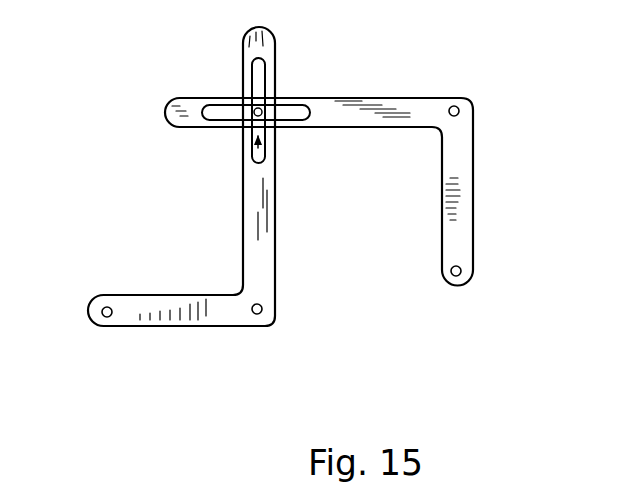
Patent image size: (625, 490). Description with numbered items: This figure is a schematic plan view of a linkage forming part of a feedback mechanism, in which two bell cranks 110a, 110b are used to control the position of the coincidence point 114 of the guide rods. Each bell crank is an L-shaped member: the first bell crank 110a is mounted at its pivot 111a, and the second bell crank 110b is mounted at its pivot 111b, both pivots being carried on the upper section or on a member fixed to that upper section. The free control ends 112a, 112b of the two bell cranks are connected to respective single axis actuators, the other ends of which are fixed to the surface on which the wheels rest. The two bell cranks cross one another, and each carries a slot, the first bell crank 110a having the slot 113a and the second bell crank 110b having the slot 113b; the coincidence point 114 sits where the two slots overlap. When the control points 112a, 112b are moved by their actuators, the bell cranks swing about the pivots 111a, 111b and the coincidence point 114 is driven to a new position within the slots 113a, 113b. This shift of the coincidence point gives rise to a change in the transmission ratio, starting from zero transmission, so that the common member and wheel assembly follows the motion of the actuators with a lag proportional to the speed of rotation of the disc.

The bell crank 110a is at (137, 294).
The bell crank 110b is at (476, 159).
The pivot 111a is at (276, 320).
The pivot 111b is at (456, 99).
The control end 112a is at (99, 329).
The control end 112b is at (477, 275).
The slot 113a is at (265, 167).
The slot 113b is at (199, 102).
The coincidence point 114 is at (255, 149).